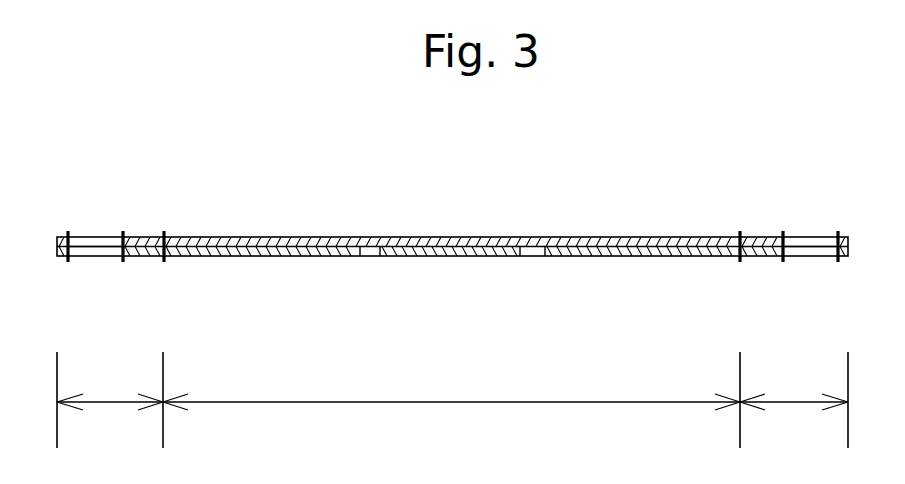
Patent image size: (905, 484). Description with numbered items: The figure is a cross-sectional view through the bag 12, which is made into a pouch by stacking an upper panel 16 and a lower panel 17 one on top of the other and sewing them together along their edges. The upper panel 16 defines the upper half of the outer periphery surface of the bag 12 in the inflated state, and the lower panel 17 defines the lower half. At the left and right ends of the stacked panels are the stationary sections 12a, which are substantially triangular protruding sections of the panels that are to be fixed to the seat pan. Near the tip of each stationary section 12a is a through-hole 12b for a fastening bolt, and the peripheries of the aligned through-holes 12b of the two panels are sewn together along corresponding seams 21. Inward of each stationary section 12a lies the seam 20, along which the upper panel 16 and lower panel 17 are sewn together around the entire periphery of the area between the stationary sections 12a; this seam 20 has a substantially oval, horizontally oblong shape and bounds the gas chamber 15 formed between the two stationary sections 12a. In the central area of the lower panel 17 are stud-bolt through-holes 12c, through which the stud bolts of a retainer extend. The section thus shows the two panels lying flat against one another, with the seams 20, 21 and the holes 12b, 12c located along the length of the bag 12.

The bag 12 is at (557, 217).
The stationary section 12a is at (452, 400).
The through-hole 12b is at (97, 237).
The stud-bolt through-hole 12c is at (372, 257).
The gas chamber 15 is at (451, 423).
The upper panel 16 is at (232, 237).
The lower panel 17 is at (203, 257).
The seam 20 is at (164, 237).
The seam 21 is at (68, 237).